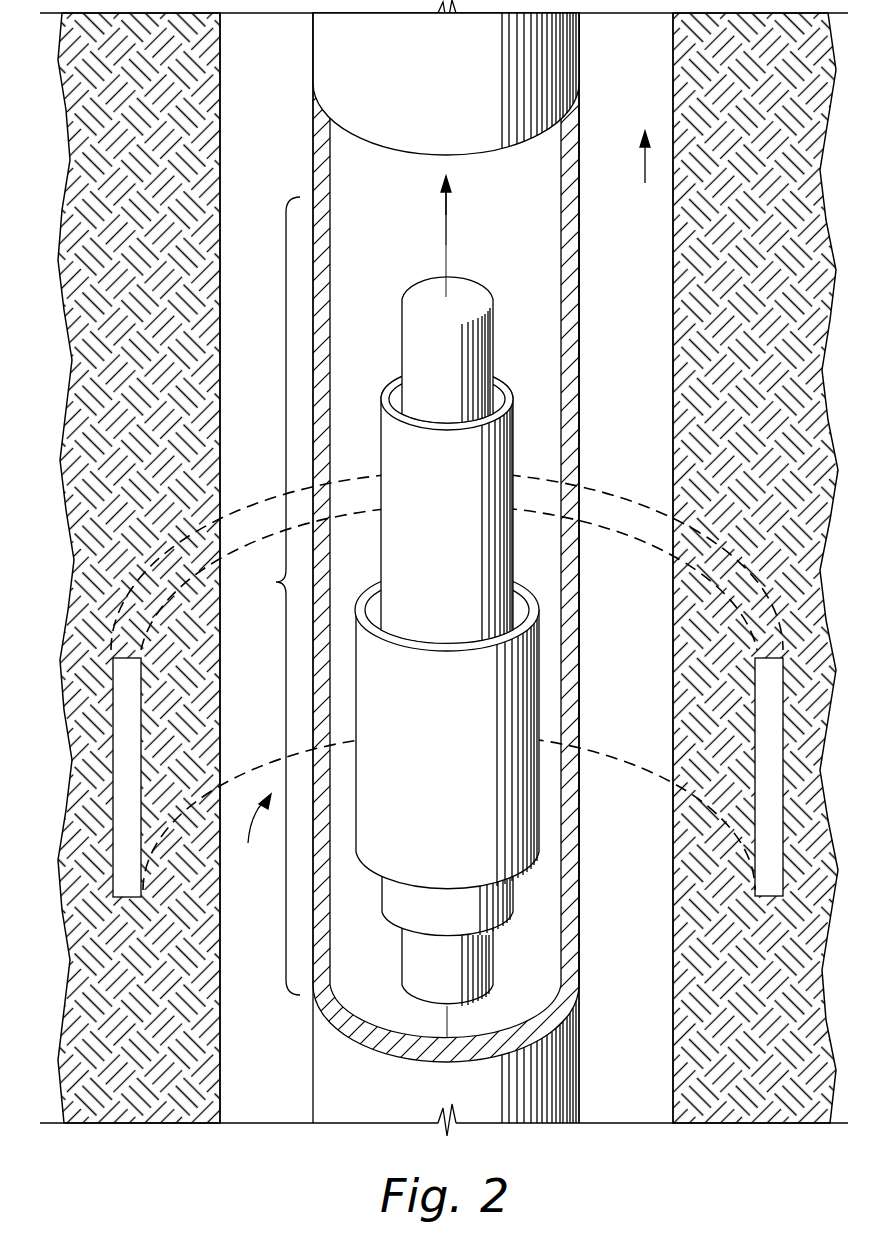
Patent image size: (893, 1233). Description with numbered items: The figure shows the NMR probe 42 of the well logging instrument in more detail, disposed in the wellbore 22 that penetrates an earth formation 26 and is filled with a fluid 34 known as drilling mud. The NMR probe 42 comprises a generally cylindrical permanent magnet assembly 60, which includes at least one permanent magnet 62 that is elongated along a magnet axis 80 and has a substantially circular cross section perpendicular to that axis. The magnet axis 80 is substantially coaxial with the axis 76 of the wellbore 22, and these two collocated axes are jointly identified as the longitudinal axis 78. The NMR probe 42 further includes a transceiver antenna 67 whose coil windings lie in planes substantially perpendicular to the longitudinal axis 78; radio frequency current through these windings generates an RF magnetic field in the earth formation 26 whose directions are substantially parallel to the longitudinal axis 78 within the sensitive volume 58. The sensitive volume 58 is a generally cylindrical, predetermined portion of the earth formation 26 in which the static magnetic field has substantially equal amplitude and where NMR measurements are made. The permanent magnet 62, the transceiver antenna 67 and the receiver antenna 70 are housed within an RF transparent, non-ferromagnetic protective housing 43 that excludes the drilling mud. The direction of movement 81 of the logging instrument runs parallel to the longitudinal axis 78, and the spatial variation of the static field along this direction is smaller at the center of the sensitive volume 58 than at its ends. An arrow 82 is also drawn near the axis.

The wellbore 22 is at (267, 984).
The earth formation 26 is at (212, 108).
The fluid 34 is at (640, 1046).
The NMR probe 42 is at (252, 833).
The protective housing 43 is at (320, 173).
The sensitive volume 58 is at (125, 897).
The permanent magnet assembly 60 is at (271, 596).
The permanent magnet 62 is at (412, 338).
The transceiver antenna 67 is at (490, 446).
The receiver antenna 70 is at (520, 800).
The axis of the wellbore 76 is at (446, 227).
The longitudinal axis 78 is at (447, 1018).
The magnet axis 80 is at (446, 257).
The direction of movement 81 is at (645, 162).
The flow direction 82 is at (446, 205).